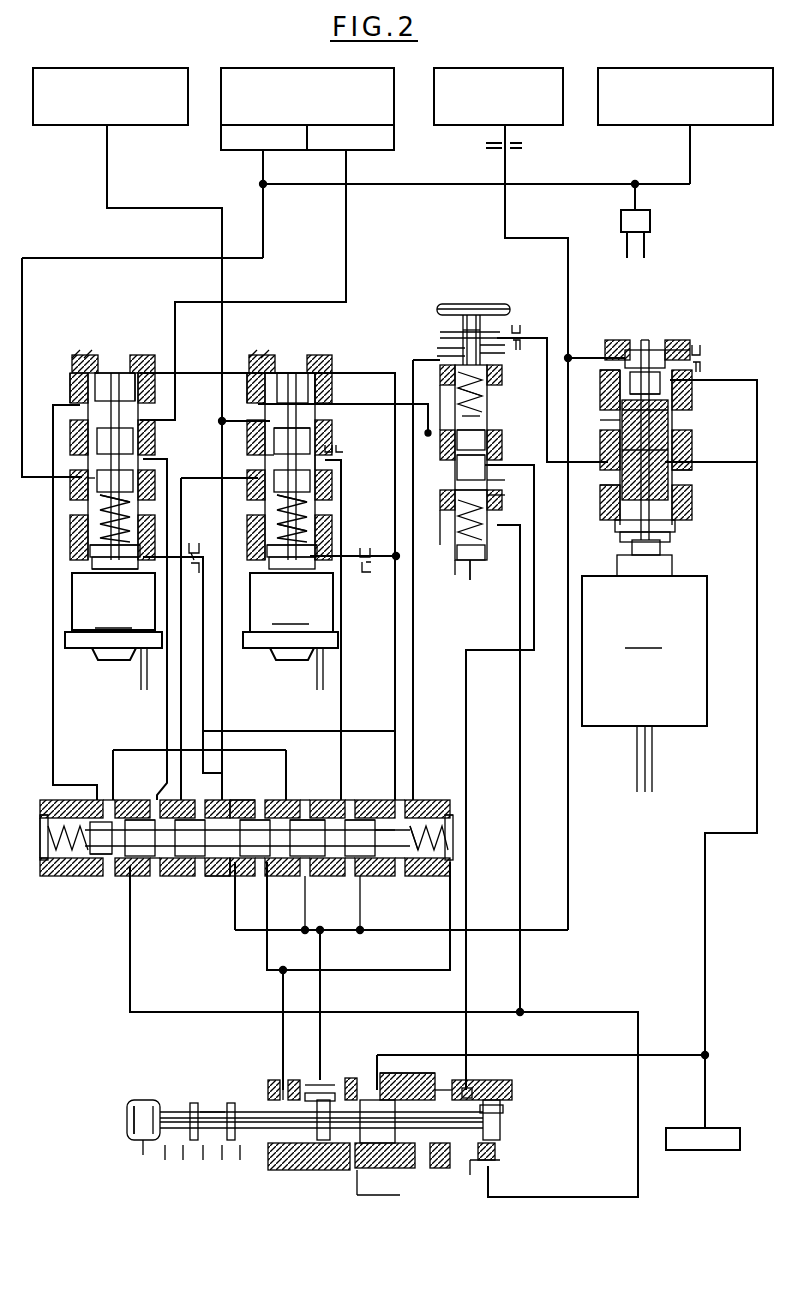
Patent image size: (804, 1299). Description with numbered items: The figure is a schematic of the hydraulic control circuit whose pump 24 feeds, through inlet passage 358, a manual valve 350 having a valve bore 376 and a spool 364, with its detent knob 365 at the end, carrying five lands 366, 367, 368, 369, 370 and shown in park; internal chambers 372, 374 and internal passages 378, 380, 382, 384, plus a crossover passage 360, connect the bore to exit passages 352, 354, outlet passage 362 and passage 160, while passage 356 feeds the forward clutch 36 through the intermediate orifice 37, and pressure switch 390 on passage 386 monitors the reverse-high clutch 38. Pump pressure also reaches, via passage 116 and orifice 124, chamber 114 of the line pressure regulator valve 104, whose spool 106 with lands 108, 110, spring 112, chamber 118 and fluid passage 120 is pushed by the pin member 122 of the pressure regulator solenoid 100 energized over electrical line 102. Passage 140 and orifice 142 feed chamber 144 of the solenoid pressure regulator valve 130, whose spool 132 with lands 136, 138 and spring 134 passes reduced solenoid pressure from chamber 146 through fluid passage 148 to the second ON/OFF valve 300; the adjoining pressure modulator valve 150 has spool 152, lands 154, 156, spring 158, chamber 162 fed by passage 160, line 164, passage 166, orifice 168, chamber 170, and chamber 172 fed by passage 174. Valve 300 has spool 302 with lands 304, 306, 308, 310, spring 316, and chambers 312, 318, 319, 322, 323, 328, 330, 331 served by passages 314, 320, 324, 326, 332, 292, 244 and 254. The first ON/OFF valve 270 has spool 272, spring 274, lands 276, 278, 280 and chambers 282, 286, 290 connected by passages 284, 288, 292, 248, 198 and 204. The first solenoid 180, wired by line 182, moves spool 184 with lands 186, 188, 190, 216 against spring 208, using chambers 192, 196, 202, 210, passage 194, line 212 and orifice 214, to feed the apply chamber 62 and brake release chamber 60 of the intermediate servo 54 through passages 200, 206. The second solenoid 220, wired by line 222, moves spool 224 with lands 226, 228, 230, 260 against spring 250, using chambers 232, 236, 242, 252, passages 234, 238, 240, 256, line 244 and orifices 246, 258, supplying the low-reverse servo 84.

The pump 24 is at (740, 1120).
The forward clutch 36 is at (553, 122).
The intermediate orifice 37 is at (492, 148).
The reverse-high clutch 38 is at (753, 126).
The intermediate servo 54 is at (258, 66).
The brake release chamber 60 is at (240, 152).
The apply chamber 62 is at (368, 148).
The low-reverse servo 84 is at (80, 135).
The pressure regulator solenoid 100 is at (644, 533).
The electrical line 102 is at (655, 778).
The line pressure regulator valve 104 is at (614, 422).
The multiple land valve spool 106 is at (665, 414).
The land 108 is at (652, 348).
The land 110 is at (668, 396).
The spring 112 is at (620, 482).
The chamber 114 is at (615, 396).
The passage 116 is at (705, 1034).
The chamber 118 is at (683, 356).
The fluid passage 120 is at (590, 357).
The pin member 122 is at (660, 452).
The orifice 124 is at (705, 360).
The solenoid pressure regulator valve 130 is at (437, 309).
The valve spool 132 is at (495, 325).
The spring 134 is at (486, 401).
The land 136 is at (470, 310).
The land 138 is at (488, 375).
The hydraulic passage 140 is at (720, 470).
The orifice 142 is at (537, 326).
The chamber 144 is at (440, 338).
The chamber 146 is at (437, 354).
The fluid passage 148 is at (414, 700).
The pressure modulator valve 150 is at (460, 588).
The modulator valve spool 152 is at (487, 462).
The land 154 is at (490, 441).
The land 156 is at (489, 494).
The mechanical spring 158 is at (473, 562).
The fluid passage 160 is at (466, 733).
The chamber 162 is at (490, 483).
The fluid line 164 is at (357, 404).
The passage 166 is at (452, 503).
The orifice 168 is at (450, 402).
The chamber 170 is at (495, 424).
The chamber 172 is at (456, 562).
The passage 174 is at (520, 800).
The first solenoid 180 is at (113, 507).
The electrical line 182 is at (144, 686).
The solenoid valve spool 184 is at (100, 402).
The land 186 is at (108, 382).
The land 188 is at (145, 437).
The land 190 is at (98, 514).
The chamber 192 is at (95, 362).
The passage 194 is at (200, 368).
The chamber 196 is at (138, 402).
The passage 198 is at (25, 712).
The fluid passage 200 is at (348, 250).
The third chamber 202 is at (98, 484).
The hydraulic line 204 is at (160, 455).
The hydraulic line 206 is at (266, 240).
The spring 208 is at (76, 548).
The fourth chamber 210 is at (78, 566).
The hydraulic line 212 is at (251, 730).
The orifice 214 is at (219, 639).
The land 216 is at (80, 562).
The second solenoid 220 is at (290, 507).
The electrical line 222 is at (320, 688).
The valve spool 224 is at (266, 399).
The land 226 is at (294, 388).
The land 228 is at (260, 456).
The land 230 is at (268, 510).
The first chamber 232 is at (280, 347).
The passage 234 is at (351, 373).
The second chamber 236 is at (312, 400).
The passage 238 is at (225, 421).
The passage 240 is at (220, 241).
The third chamber 242 is at (320, 436).
The line 244 is at (335, 493).
The orifice 246 is at (341, 476).
The passage 248 is at (182, 678).
The spring 250 is at (268, 536).
The fourth chamber 252 is at (322, 556).
The passage 254 is at (384, 762).
The passage 256 is at (378, 600).
The orifice 258 is at (344, 574).
The fourth land 260 is at (286, 565).
The first ON/OFF valve 270 is at (119, 894).
The valve spool 272 is at (105, 800).
The spring 274 is at (42, 822).
The land 276 is at (190, 800).
The land 278 is at (133, 800).
The land 280 is at (78, 876).
The first chamber 282 is at (195, 912).
The passage 284 is at (222, 696).
The second chamber 286 is at (178, 878).
The passage 288 is at (167, 735).
The third chamber 290 is at (80, 808).
The passage 292 is at (225, 752).
The second ON/OFF valve 300 is at (240, 862).
The valve spool 302 is at (260, 797).
The land 304 is at (210, 862).
The land 306 is at (292, 800).
The land 308 is at (365, 870).
The land 310 is at (478, 800).
The first chamber 312 is at (238, 787).
The passage 314 is at (246, 918).
The spring 316 is at (440, 876).
The second chamber 318 is at (275, 865).
The chamber 319 is at (308, 800).
The passage 320 is at (267, 950).
The third chamber 322 is at (325, 870).
The chamber 323 is at (355, 800).
The passage 324 is at (305, 918).
The passage 326 is at (360, 912).
The fourth chamber 328 is at (371, 800).
The fifth chamber 330 is at (455, 806).
The chamber 331 is at (483, 800).
The passage 332 is at (450, 948).
The manual valve 350 is at (118, 1138).
The exit passage 352 is at (283, 988).
The exit passage 354 is at (322, 990).
The passage 356 is at (503, 222).
The inlet passage 358 is at (542, 1055).
The crossover passage 360 is at (433, 1205).
The outlet passage 362 is at (555, 1012).
The manual valve spool 364 is at (202, 1095).
The detent knob 365 is at (128, 1118).
The land 366 is at (190, 1102).
The land 367 is at (232, 1102).
The land 368 is at (323, 1150).
The land 369 is at (389, 1148).
The land 370 is at (500, 1132).
The internal chamber 372 is at (465, 1175).
The internal chamber 374 is at (500, 1162).
The valve bore 376 is at (400, 1100).
The internal passage 378 is at (429, 1082).
The internal passage 380 is at (481, 1084).
The internal passage 382 is at (292, 1085).
The internal passage 384 is at (335, 1085).
The passage 386 is at (547, 184).
The pressure switch 390 is at (642, 238).